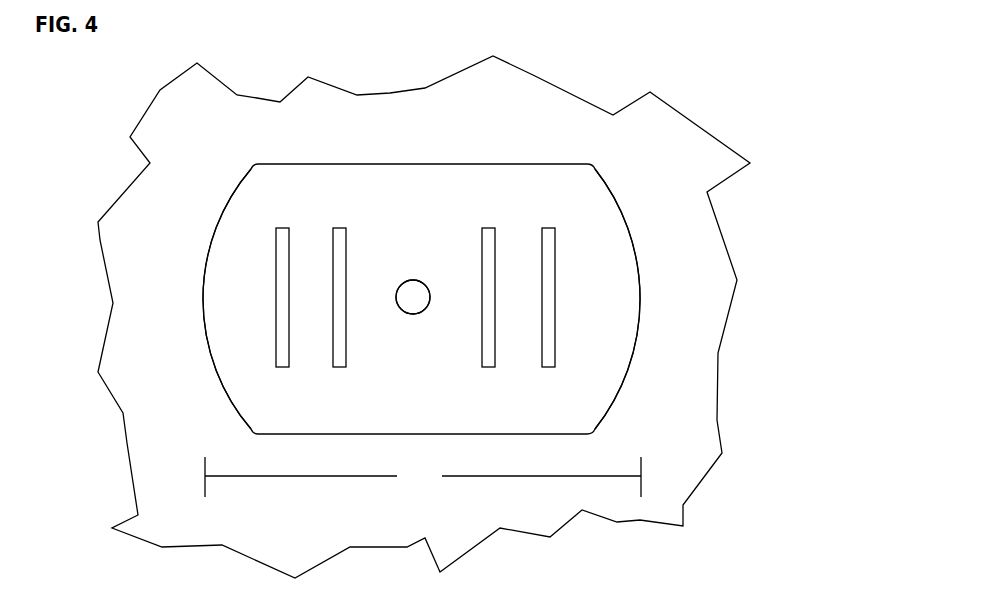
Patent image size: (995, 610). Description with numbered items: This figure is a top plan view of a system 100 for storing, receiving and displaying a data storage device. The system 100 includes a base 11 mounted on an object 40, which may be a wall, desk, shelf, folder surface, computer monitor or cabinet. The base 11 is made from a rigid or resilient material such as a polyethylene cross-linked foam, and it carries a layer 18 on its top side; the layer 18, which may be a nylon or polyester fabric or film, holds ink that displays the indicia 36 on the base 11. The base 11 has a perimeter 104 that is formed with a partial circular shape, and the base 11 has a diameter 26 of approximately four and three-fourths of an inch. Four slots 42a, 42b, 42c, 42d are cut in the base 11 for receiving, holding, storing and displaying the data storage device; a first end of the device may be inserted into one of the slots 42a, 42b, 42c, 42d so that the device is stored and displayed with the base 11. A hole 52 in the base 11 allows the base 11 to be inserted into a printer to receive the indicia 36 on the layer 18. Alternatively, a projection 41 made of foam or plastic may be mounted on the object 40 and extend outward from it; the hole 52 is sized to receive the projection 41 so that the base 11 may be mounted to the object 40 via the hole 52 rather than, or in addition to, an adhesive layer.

The system 100 is at (732, 360).
The object 40 is at (151, 432).
The base 11 is at (238, 178).
The layer 18 is at (610, 260).
The perimeter 104 is at (203, 275).
The indicia 36 is at (396, 180).
The slot 42a is at (287, 369).
The slot 42b is at (349, 348).
The slot 42c is at (496, 369).
The slot 42d is at (546, 226).
The projection 41 is at (413, 297).
The hole 52 is at (420, 316).
The diameter 26 is at (423, 477).